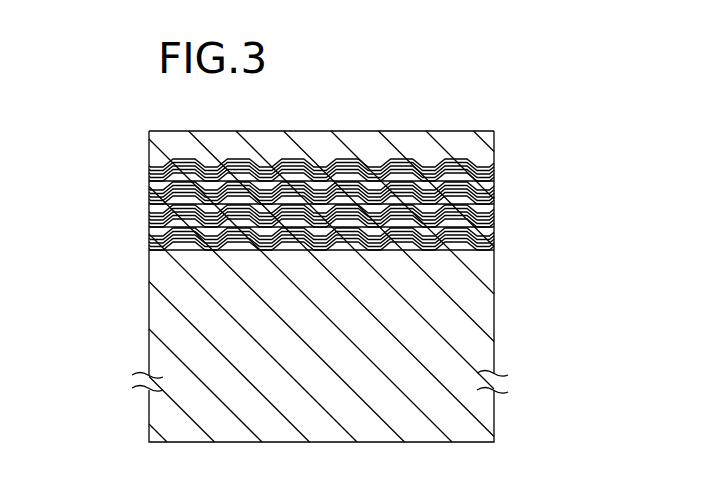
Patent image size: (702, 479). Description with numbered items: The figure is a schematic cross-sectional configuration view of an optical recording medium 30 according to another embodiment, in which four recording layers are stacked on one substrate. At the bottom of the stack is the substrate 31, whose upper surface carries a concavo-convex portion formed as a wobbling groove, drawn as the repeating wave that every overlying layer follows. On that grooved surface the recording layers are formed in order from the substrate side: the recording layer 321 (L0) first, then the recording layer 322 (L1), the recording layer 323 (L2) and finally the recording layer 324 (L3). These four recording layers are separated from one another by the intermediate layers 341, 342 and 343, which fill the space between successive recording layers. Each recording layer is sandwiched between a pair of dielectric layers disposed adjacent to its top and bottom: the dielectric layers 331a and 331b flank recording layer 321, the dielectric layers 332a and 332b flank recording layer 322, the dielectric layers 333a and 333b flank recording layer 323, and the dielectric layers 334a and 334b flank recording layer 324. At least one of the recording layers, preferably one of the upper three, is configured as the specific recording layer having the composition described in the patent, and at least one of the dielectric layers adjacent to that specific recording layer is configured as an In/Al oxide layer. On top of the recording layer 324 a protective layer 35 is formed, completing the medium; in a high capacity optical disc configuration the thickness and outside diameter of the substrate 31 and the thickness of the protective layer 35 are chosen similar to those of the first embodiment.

The optical recording medium 30 is at (529, 77).
The substrate 31 is at (495, 323).
The protective layer 35 is at (495, 140).
The recording layer (L0) 321 is at (495, 243).
The recording layer (L1) 322 is at (495, 220).
The recording layer (L2) 323 is at (495, 198).
The recording layer (L3) 324 is at (495, 165).
The dielectric layer 331a is at (149, 248).
The dielectric layer 331b is at (149, 241).
The dielectric layer 332a is at (149, 226).
The dielectric layer 332b is at (149, 218).
The dielectric layer 333a is at (149, 202).
The dielectric layer 333b is at (149, 192).
The dielectric layer 334a is at (149, 180).
The dielectric layer 334b is at (149, 170).
The intermediate layer 341 is at (495, 232).
The intermediate layer 342 is at (495, 210).
The intermediate layer 343 is at (495, 187).